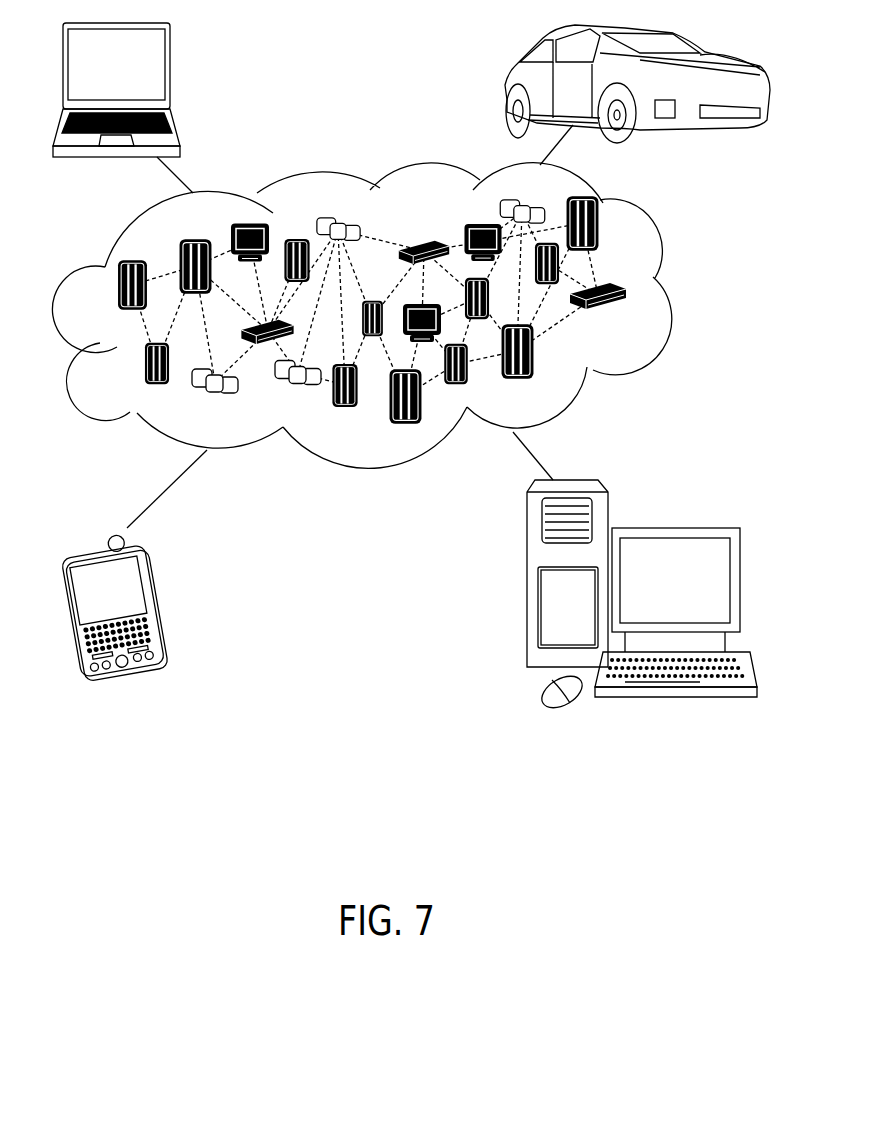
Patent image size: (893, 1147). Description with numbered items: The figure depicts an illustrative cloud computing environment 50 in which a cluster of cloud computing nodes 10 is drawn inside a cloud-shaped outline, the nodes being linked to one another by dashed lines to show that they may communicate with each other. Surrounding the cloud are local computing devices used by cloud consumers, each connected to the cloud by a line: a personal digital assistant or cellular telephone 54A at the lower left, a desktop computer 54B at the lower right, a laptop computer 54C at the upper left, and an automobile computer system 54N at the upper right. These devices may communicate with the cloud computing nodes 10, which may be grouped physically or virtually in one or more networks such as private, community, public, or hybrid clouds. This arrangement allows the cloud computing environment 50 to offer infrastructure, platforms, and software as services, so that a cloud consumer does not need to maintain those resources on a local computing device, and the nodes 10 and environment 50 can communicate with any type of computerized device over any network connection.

The cloud computing node 10 is at (636, 322).
The cloud computing environment 50 is at (385, 316).
The personal digital assistant or cellular telephone 54A is at (163, 603).
The desktop computer 54B is at (673, 525).
The laptop computer 54C is at (168, 75).
The automobile computer system 54N is at (507, 87).